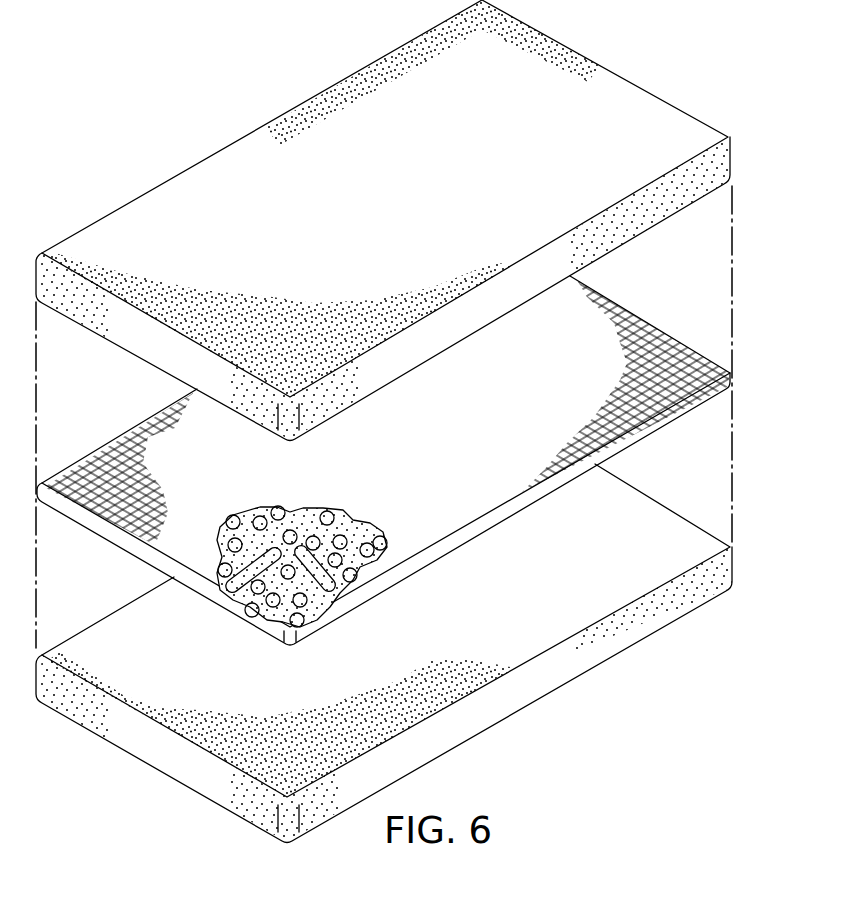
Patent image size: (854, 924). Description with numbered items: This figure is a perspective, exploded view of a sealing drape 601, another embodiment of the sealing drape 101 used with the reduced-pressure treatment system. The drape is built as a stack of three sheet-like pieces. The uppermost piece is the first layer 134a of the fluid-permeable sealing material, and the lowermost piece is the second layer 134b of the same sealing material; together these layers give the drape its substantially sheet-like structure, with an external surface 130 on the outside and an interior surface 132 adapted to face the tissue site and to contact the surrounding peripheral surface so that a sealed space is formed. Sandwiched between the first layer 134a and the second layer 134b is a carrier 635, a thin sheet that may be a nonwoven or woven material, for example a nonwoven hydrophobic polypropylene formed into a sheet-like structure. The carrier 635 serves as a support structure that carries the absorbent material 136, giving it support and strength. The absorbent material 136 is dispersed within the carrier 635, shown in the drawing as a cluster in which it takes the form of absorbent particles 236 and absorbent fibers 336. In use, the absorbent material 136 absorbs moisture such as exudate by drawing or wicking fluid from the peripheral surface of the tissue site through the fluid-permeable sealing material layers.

The sealing drape 101 is at (217, 68).
The sealing drape 601 is at (217, 68).
The external surface 130 is at (630, 97).
The interior surface 132 is at (527, 710).
The first layer 134a is at (458, 334).
The second layer 134b is at (201, 784).
The carrier 635 is at (668, 418).
The absorbent material 136 is at (257, 517).
The absorbent particles 236 is at (257, 517).
The absorbent fibers 336 is at (381, 528).